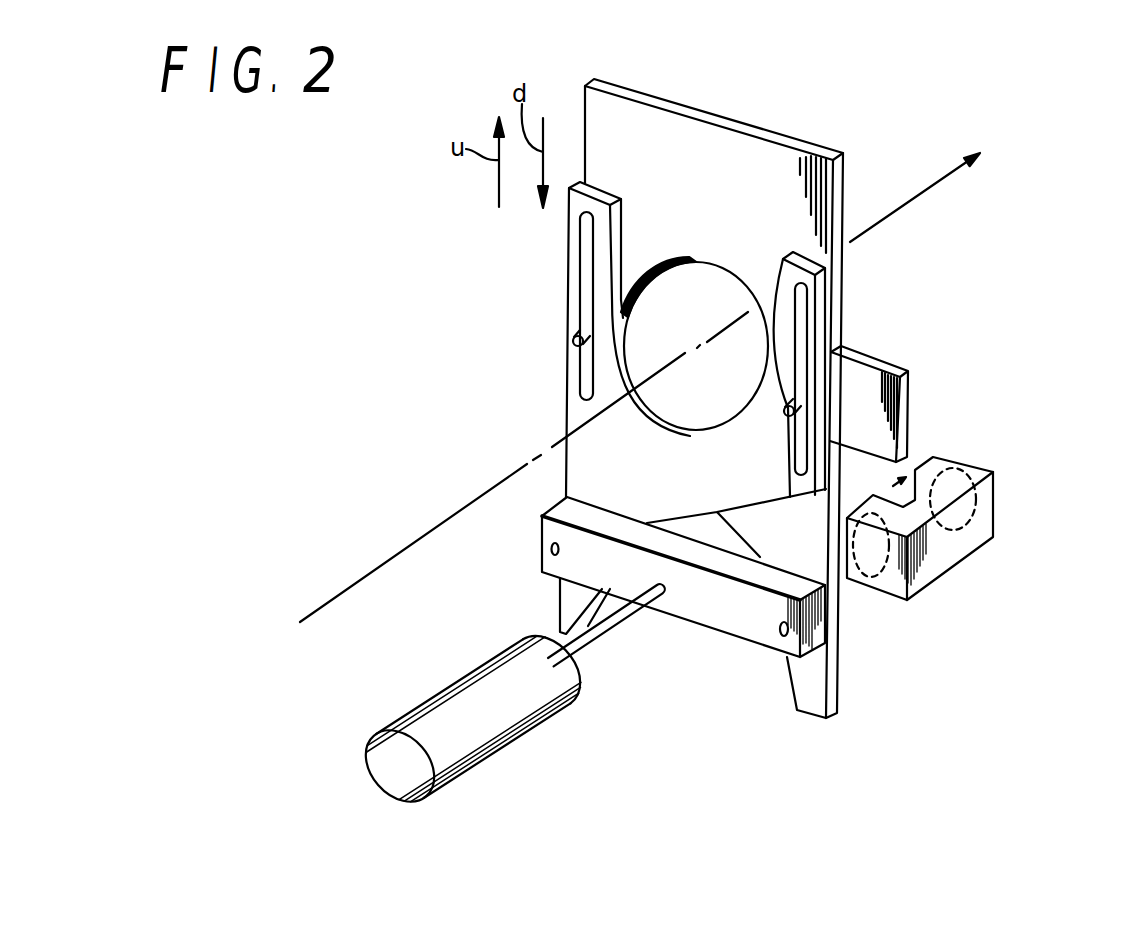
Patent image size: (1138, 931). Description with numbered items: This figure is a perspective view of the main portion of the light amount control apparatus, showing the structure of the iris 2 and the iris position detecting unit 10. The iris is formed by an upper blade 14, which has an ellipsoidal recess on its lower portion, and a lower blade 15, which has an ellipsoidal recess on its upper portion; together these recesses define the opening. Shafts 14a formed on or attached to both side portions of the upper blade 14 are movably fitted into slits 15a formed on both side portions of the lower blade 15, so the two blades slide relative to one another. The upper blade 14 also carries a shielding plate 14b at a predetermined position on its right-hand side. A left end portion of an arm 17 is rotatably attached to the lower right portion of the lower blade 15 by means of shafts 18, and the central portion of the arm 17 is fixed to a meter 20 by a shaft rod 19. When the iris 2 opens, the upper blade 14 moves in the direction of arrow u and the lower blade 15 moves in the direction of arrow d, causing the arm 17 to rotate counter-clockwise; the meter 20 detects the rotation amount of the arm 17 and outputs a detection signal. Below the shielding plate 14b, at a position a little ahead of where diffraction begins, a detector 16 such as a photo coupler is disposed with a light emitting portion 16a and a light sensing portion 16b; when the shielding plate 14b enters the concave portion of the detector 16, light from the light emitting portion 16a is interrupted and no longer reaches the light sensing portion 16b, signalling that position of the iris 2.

The iris 2 is at (781, 780).
The iris position detecting unit 10 is at (360, 673).
The upper blade 14 is at (753, 148).
The shafts 14a is at (783, 408).
The shielding plate 14b is at (883, 425).
The lower blade 15 is at (783, 325).
The slits 15a is at (585, 258).
The detector 16 is at (972, 537).
The light emitting portion 16a is at (880, 580).
The light sensing portion 16b is at (1000, 477).
The arm 17 is at (700, 612).
The shafts 18 is at (549, 548).
The shaft rod 19 is at (560, 650).
The meter 20 is at (518, 730).